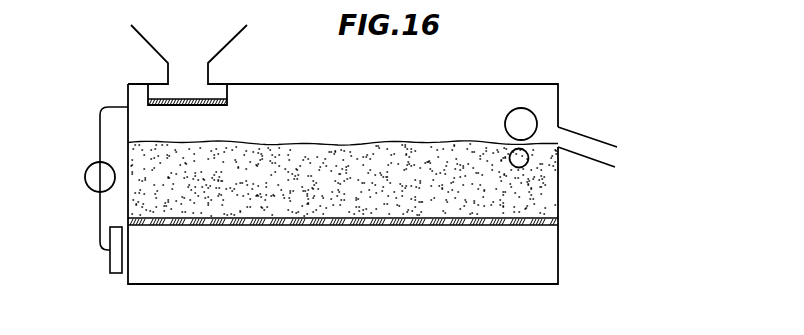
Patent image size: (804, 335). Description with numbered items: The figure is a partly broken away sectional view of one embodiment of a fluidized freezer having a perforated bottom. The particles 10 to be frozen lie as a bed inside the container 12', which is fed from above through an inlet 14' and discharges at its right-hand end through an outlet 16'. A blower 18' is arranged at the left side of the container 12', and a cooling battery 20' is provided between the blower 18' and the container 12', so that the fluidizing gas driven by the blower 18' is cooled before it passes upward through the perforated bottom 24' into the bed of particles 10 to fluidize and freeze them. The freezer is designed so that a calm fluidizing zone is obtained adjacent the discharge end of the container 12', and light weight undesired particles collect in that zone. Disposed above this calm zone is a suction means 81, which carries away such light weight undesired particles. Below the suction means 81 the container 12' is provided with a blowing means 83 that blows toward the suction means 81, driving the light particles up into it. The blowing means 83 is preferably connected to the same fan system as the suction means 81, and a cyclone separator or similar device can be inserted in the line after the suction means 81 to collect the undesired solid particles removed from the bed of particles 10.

The particulate material bed 10 is at (361, 160).
The container 12' is at (343, 166).
The feed hopper 14' is at (204, 65).
The discharge chute 16' is at (587, 133).
The blower 18' is at (81, 178).
The cooling battery 20' is at (102, 266).
The conveyor belt 24' is at (343, 240).
The suction means 81 is at (506, 130).
The blowing means 83 is at (511, 166).